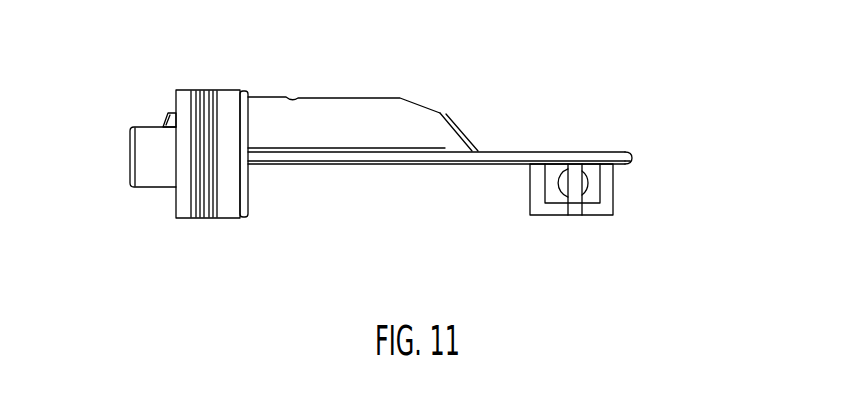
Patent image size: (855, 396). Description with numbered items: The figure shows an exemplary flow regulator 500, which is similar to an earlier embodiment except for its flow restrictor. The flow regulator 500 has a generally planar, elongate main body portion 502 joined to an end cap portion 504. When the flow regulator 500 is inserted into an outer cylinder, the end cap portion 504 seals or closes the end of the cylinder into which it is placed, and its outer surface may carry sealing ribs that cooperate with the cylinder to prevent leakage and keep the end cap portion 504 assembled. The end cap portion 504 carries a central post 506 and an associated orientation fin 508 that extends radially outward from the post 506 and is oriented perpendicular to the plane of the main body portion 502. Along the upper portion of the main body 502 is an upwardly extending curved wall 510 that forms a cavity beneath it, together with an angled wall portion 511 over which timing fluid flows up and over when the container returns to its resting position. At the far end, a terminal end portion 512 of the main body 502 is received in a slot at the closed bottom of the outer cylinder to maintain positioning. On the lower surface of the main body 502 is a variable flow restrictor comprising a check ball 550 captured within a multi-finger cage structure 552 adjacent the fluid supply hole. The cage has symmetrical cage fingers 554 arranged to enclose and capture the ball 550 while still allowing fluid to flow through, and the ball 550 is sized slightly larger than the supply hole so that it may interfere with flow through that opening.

The flow regulator 500 is at (390, 120).
The main body portion 502 is at (418, 165).
The end cap portion 504 is at (227, 202).
The central post 506 is at (140, 142).
The orientation fin 508 is at (167, 115).
The curved wall 510 is at (308, 123).
The angled wall portion 511 is at (460, 138).
The terminal end portion 512 is at (633, 157).
The check ball 550 is at (562, 183).
The multi-finger cage structure 552 is at (618, 197).
The cage fingers 554 is at (590, 212).